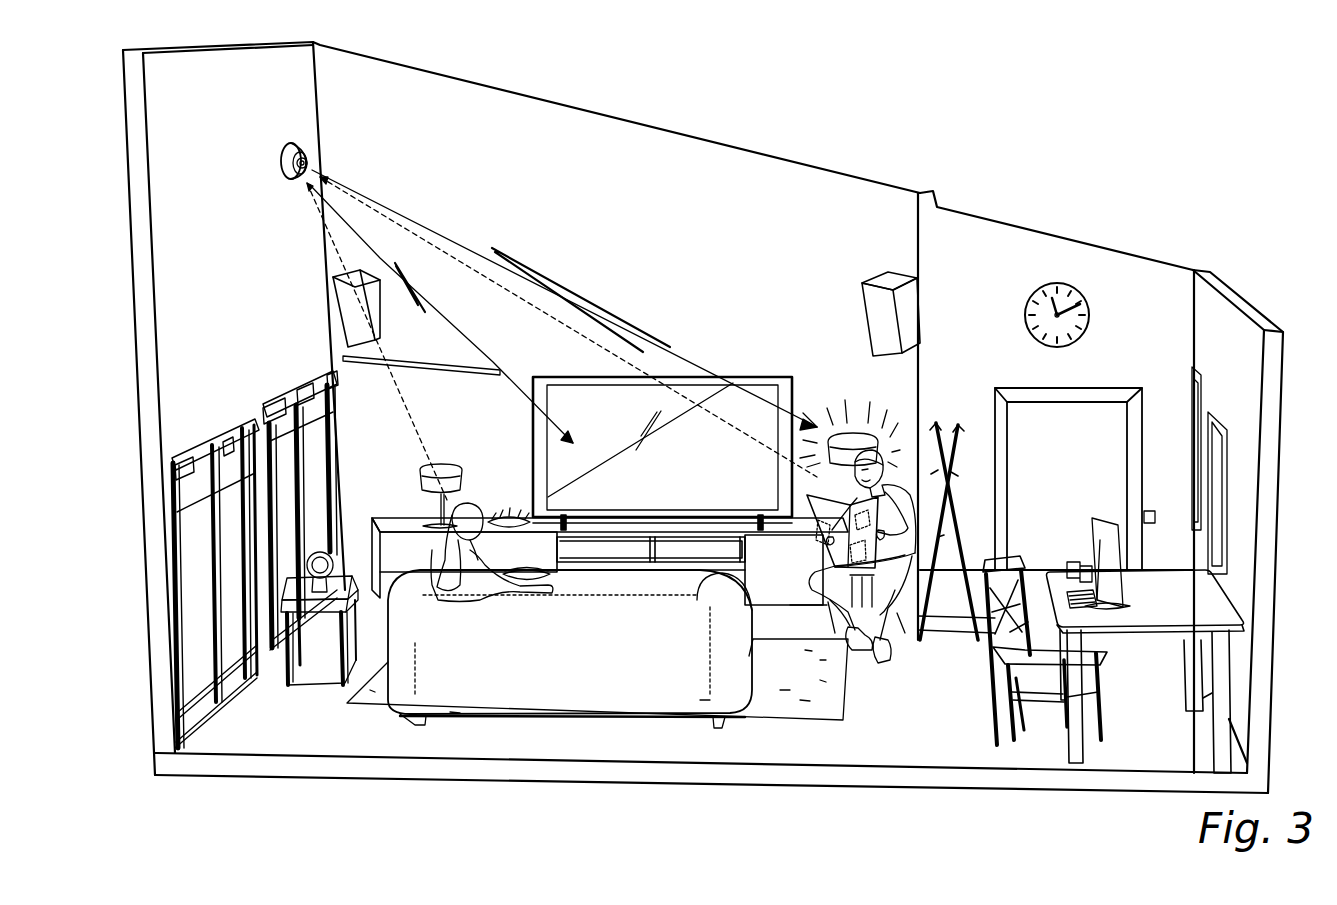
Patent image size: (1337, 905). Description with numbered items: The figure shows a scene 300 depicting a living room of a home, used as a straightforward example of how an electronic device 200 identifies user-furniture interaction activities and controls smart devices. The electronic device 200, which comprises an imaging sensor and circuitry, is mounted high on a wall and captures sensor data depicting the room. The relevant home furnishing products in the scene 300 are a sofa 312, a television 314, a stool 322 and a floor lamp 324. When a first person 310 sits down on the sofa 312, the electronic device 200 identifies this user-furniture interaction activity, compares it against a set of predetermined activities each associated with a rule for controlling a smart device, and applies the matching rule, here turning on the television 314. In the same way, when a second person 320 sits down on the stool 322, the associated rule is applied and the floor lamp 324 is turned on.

The electronic device 200 is at (287, 142).
The scene 300 is at (703, 417).
The first person 310 is at (488, 605).
The sofa 312 is at (643, 663).
The television 314 is at (752, 378).
The second person 320 is at (902, 658).
The stool 322 is at (910, 640).
The floor lamp 324 is at (848, 430).